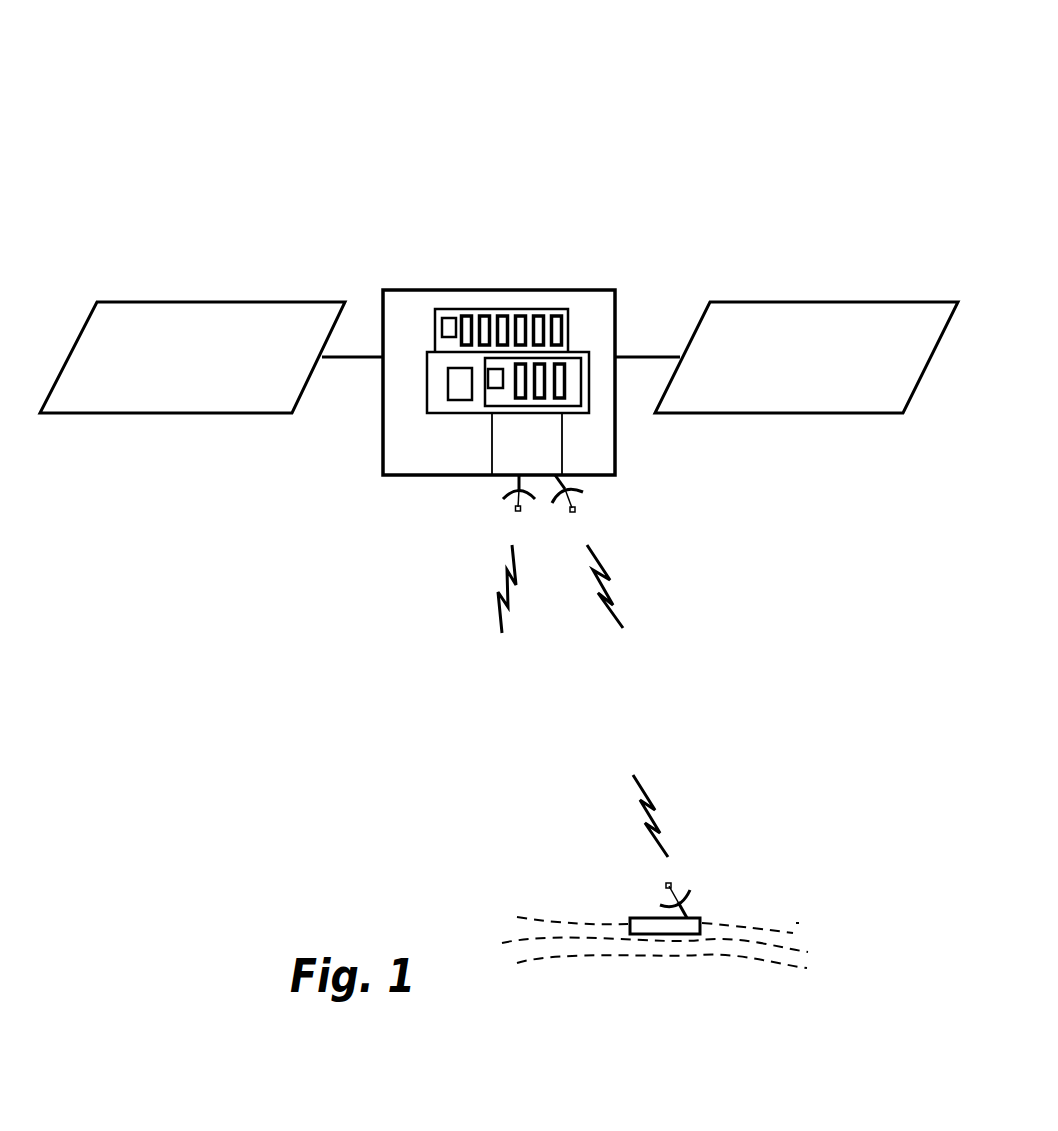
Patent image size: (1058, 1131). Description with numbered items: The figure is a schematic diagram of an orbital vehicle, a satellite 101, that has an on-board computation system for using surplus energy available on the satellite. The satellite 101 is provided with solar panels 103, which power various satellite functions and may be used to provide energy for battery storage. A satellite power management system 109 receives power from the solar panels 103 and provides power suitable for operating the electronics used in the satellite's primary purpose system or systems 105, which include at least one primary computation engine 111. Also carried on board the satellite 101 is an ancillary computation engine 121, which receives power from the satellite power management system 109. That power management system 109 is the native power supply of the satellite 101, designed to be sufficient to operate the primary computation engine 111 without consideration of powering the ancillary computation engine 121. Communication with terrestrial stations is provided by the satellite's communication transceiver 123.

The satellite 101 is at (693, 138).
The solar panels 103 is at (235, 354).
The primary purpose system or systems 105 is at (427, 378).
The satellite power management system 109 is at (447, 390).
The primary computation engine 111 is at (583, 368).
The ancillary computation engine 121 is at (460, 310).
The communication transceiver 123 is at (562, 437).